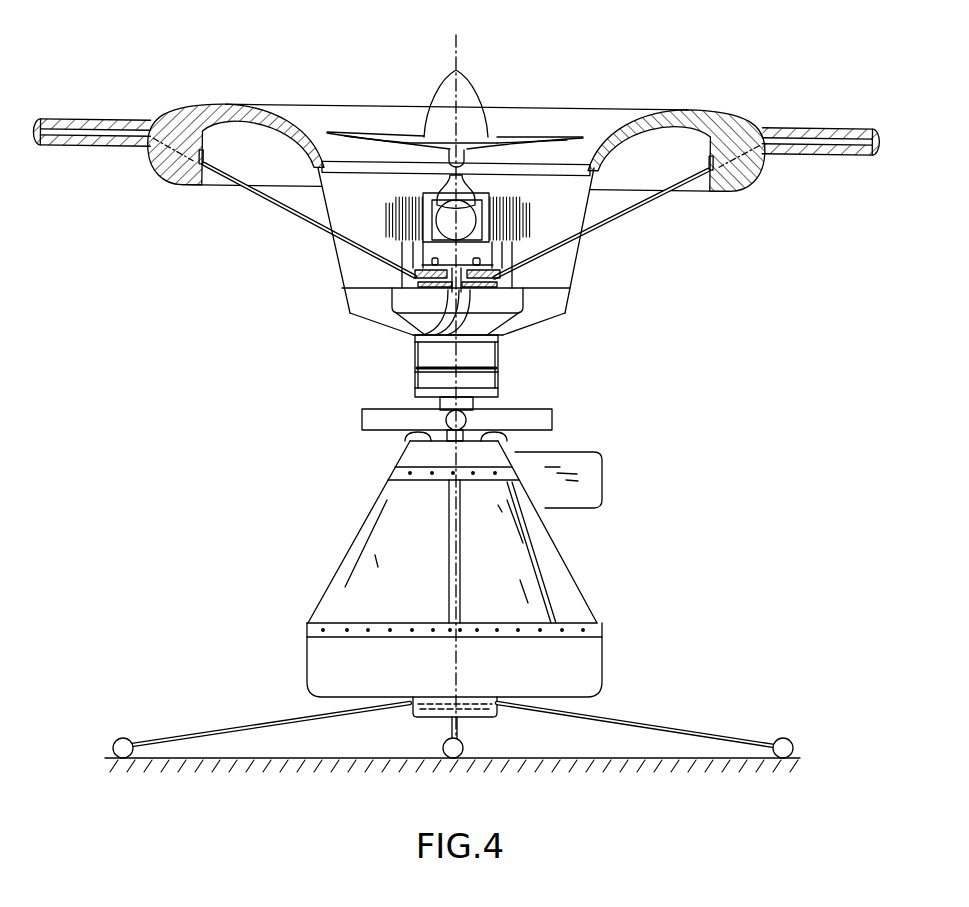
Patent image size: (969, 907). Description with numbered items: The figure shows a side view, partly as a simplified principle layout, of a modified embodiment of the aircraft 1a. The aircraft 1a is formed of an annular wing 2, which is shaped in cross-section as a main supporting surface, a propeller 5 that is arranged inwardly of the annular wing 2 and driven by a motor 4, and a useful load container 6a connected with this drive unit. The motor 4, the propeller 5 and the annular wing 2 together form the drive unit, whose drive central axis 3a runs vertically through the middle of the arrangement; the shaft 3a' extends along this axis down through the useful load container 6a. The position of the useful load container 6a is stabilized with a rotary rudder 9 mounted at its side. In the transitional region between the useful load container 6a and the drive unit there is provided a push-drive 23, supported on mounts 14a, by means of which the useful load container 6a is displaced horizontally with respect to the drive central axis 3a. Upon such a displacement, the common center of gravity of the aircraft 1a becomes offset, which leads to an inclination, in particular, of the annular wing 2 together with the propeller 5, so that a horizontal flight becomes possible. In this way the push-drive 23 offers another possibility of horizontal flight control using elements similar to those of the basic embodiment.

The aircraft 1a is at (652, 456).
The annular wing 2 is at (723, 118).
The drive central axis 3a is at (485, 377).
The vertical shaft 3a' is at (482, 551).
The motor 4 is at (347, 243).
The propeller 5 is at (530, 136).
The useful load container 6a is at (360, 562).
The rotary rudder 9 is at (590, 493).
The bearing mount 14a is at (410, 440).
The push-drive 23 is at (548, 395).